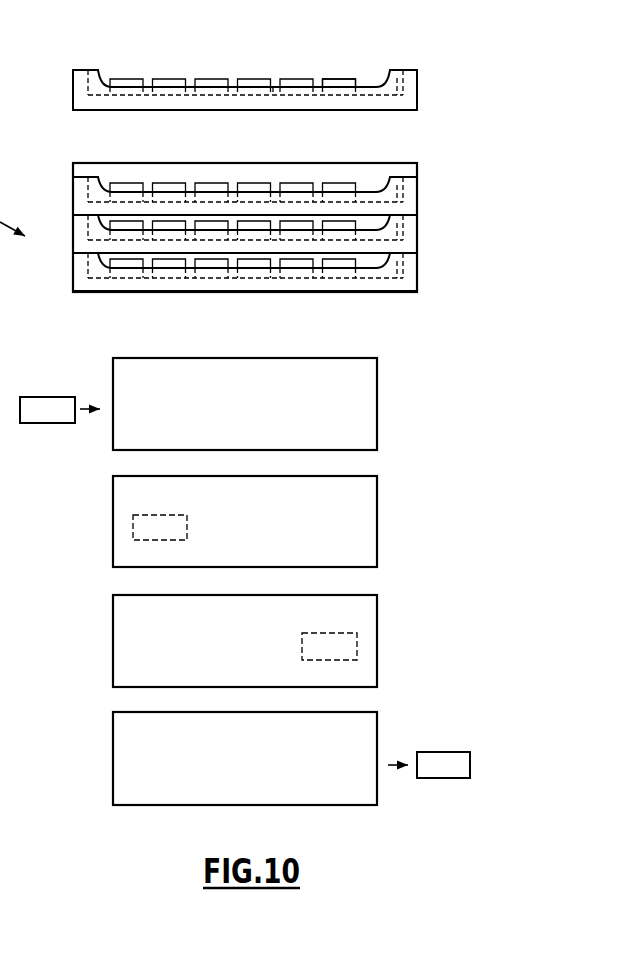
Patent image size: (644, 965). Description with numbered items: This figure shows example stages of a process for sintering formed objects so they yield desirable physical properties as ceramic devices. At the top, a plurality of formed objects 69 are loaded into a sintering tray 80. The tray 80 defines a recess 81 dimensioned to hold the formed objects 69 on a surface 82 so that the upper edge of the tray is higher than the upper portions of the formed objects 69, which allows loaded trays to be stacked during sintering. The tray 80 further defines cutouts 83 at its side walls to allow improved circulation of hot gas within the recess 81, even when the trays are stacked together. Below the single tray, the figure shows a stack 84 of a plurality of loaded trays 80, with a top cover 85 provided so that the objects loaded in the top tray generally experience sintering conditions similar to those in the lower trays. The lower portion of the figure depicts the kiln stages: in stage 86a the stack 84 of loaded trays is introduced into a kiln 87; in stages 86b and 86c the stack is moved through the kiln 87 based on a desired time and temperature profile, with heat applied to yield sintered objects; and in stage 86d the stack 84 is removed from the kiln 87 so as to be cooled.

The formed objects 69 is at (163, 79).
The sintering tray 80 is at (73, 88).
The recess 81 is at (190, 78).
The surface 82 is at (273, 86).
The cutouts 83 is at (358, 79).
The stack 84 is at (52, 397).
The top cover 85 is at (358, 172).
The stage 86a is at (420, 406).
The stage 86b is at (423, 517).
The stage 86c is at (423, 637).
The stage 86d is at (423, 727).
The kiln 87 is at (203, 358).